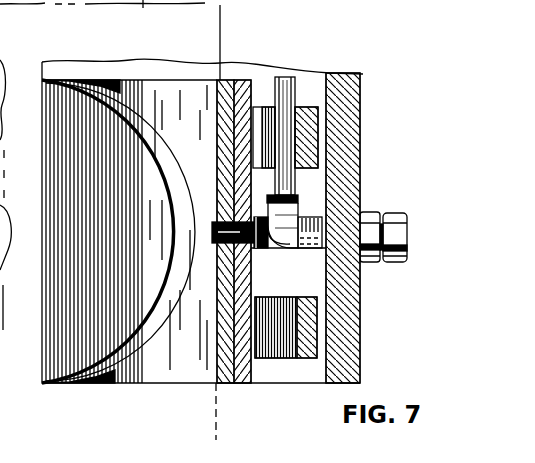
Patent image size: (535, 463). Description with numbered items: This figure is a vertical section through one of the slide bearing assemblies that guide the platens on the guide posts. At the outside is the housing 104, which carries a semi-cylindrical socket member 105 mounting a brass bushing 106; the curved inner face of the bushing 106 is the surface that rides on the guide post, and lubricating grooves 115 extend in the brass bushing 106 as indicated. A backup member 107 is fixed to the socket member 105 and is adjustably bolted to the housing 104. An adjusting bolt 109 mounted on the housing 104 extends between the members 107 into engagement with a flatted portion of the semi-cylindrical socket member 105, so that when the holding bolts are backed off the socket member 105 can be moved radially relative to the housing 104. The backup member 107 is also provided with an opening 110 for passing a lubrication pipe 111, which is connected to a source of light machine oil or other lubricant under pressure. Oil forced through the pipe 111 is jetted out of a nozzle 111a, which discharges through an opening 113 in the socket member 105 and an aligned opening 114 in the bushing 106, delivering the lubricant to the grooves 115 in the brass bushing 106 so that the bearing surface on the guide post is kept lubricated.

The housing 104 is at (334, 73).
The semi-cylindrical socket member 105 is at (238, 80).
The brass bushing 106 is at (182, 130).
The backup member 107 is at (258, 107).
The adjusting bolt 109 is at (395, 262).
The opening 110 is at (300, 107).
The lubrication pipe 111 is at (279, 77).
The nozzle 111a is at (252, 250).
The opening 113 is at (200, 242).
The opening 114 is at (190, 280).
The groove 115 is at (186, 305).